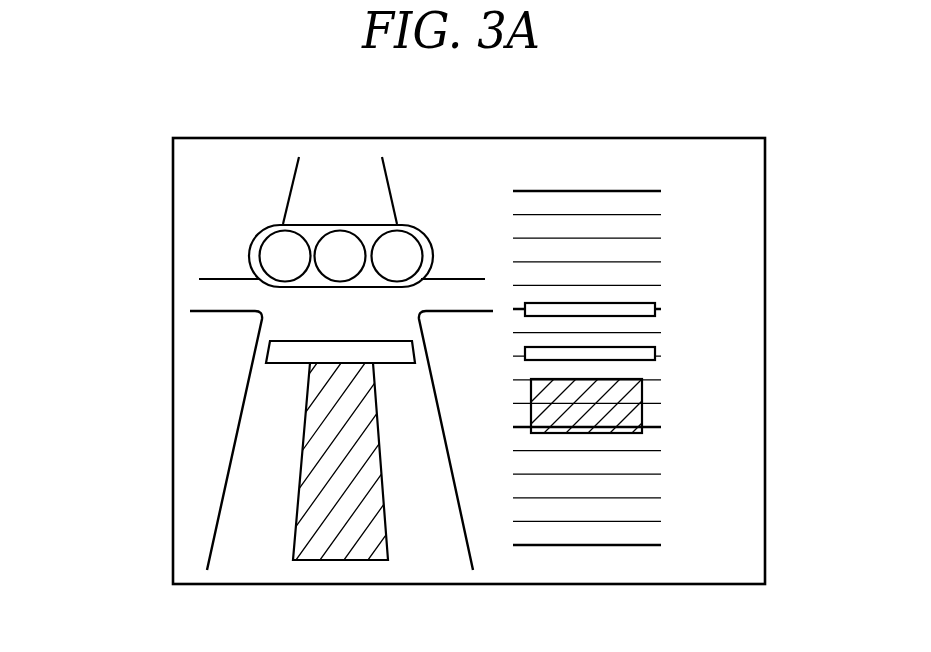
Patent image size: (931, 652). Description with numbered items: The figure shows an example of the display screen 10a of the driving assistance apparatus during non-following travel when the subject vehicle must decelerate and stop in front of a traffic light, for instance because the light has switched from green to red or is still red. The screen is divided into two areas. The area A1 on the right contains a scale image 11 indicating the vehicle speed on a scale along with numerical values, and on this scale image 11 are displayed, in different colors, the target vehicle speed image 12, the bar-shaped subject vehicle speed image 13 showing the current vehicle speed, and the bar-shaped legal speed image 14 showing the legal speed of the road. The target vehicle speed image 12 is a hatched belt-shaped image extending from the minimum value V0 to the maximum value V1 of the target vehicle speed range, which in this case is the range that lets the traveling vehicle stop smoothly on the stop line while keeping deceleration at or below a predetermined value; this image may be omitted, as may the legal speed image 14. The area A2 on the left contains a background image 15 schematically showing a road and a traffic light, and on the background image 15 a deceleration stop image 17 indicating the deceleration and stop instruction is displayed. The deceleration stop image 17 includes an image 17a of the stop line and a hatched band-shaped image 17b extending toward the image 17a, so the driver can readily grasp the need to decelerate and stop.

The display screen 10a is at (465, 163).
The scale image 11 is at (613, 546).
The target vehicle speed image 12 is at (617, 433).
The subject vehicle speed image 13 is at (617, 360).
The legal speed image 14 is at (627, 302).
The background image 15 is at (259, 558).
The deceleration stop image 17 is at (294, 436).
The image of the stop line 17a is at (300, 341).
The band-shaped image 17b is at (298, 455).
The area A1 is at (625, 175).
The area A2 is at (332, 180).
The minimum value V0 is at (557, 433).
The maximum value V1 is at (540, 379).